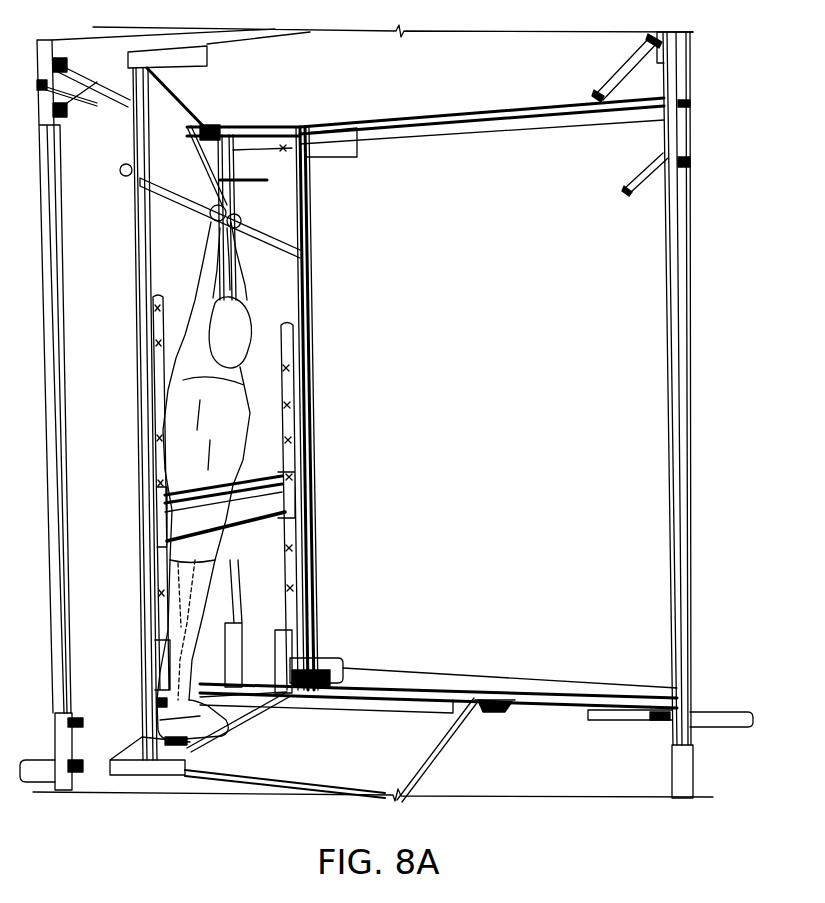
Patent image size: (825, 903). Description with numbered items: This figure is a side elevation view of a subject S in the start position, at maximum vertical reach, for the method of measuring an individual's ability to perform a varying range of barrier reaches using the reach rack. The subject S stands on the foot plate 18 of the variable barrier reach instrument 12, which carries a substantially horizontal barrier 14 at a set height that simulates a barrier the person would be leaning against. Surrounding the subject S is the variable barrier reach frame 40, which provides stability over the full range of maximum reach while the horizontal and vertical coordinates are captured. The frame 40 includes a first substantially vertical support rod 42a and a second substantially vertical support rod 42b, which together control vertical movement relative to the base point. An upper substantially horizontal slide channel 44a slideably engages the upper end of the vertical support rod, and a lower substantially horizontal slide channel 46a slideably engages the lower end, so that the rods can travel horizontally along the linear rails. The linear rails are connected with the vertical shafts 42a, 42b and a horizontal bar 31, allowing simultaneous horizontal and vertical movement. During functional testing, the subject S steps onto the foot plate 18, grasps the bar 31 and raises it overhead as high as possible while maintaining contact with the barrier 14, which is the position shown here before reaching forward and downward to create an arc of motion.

The variable barrier reach frame 40 is at (706, 163).
The upper slide channel 44a is at (507, 131).
The first substantially vertical support rod 42a is at (311, 200).
The second substantially vertical support rod 42b is at (150, 673).
The horizontal bar 31 is at (281, 249).
The subject S is at (173, 418).
The substantially horizontal barrier 14 is at (288, 498).
The variable barrier reach instrument 12 is at (136, 525).
The foot plate 18 is at (122, 745).
The lower slide channel 46a is at (547, 690).